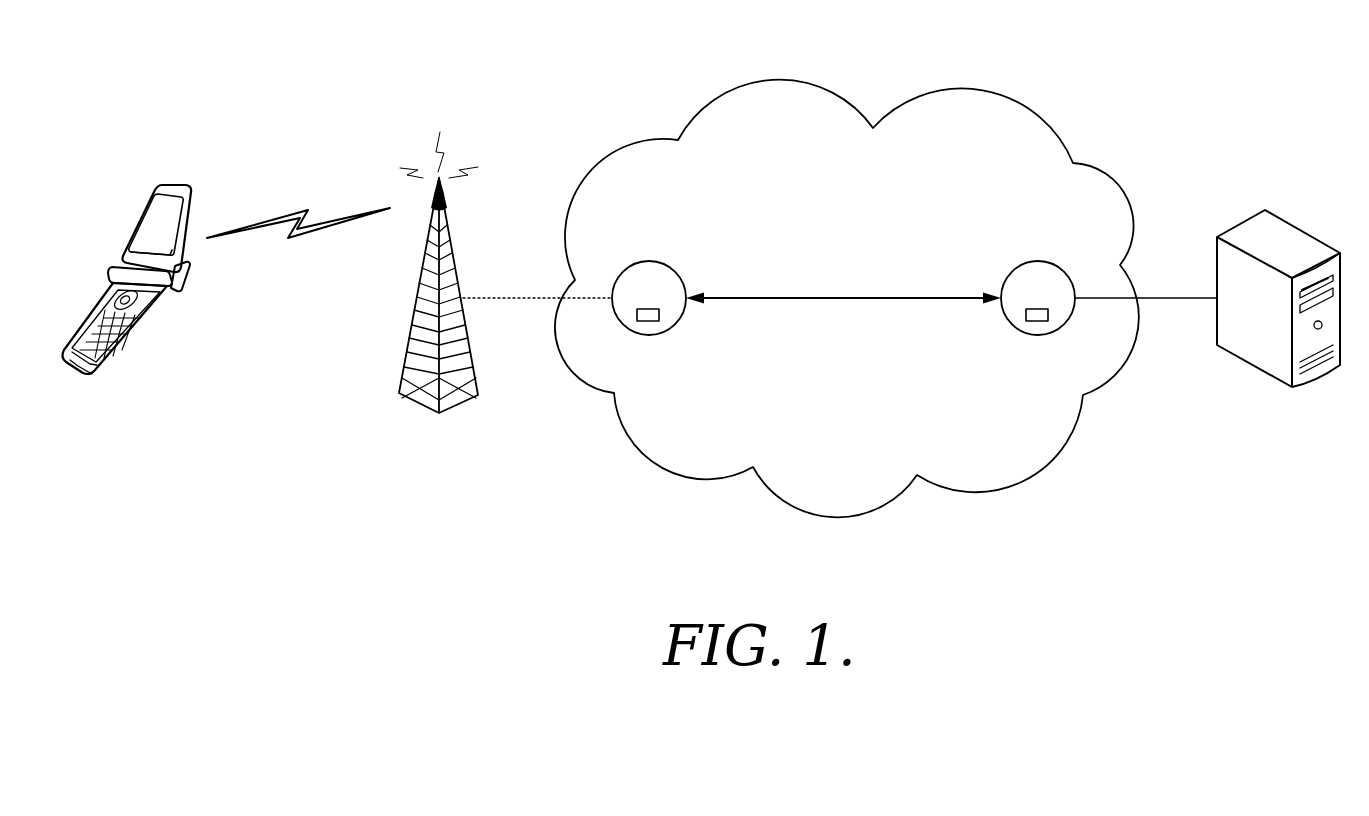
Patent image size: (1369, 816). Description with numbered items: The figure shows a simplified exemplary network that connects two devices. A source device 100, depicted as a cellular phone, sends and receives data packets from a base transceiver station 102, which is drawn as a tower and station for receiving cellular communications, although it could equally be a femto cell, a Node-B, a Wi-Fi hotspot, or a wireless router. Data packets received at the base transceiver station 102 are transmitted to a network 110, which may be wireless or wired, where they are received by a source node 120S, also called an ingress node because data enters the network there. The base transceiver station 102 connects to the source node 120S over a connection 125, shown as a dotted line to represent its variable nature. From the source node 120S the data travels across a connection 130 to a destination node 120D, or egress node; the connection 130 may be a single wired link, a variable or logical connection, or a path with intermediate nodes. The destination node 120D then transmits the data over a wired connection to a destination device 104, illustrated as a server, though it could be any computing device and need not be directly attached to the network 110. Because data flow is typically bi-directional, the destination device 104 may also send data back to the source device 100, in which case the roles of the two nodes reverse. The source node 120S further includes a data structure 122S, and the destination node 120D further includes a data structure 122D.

The source device 100 is at (152, 320).
The base transceiver station 102 is at (412, 318).
The destination device 104 is at (1268, 211).
The network 110 is at (785, 80).
The source node 120S is at (650, 262).
The destination node 120D is at (1040, 262).
The data structure 122S is at (650, 336).
The data structure 122D is at (1039, 336).
The connection 125 is at (518, 296).
The connection 130 is at (845, 296).